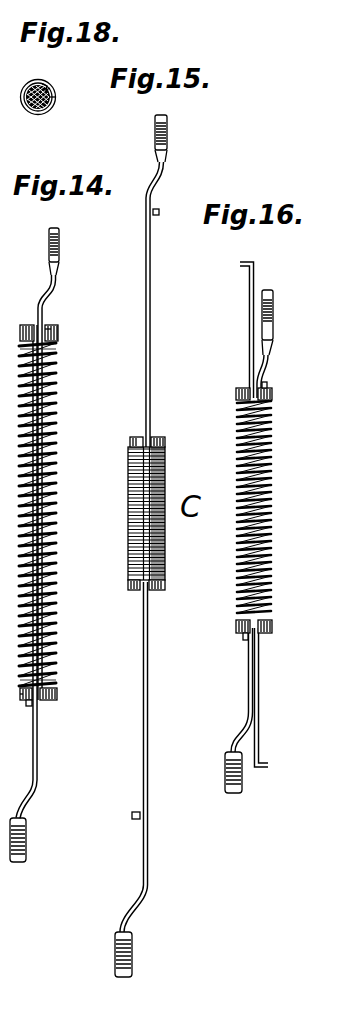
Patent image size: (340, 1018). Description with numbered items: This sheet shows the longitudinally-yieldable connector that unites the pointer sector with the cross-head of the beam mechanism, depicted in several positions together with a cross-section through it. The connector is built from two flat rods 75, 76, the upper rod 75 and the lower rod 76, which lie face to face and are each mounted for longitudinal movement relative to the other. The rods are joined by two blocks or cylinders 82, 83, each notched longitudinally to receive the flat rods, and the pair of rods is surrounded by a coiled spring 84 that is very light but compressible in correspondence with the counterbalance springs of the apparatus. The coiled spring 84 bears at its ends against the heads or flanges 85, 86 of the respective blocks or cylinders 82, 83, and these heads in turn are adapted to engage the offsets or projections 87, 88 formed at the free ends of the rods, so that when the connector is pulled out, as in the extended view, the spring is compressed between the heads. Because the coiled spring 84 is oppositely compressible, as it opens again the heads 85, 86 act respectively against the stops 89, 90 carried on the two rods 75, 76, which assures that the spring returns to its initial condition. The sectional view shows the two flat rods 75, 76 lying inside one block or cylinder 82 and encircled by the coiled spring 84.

In FIG. 18, the upper rod 75 is at (50, 90).
In FIG. 14, the upper rod 75 is at (49, 464).
In FIG. 15, the upper rod 75 is at (152, 350).
In FIG. 16, the upper rod 75 is at (262, 372).
In FIG. 18, the lower rod 76 is at (57, 98).
In FIG. 14, the lower rod 76 is at (37, 778).
In FIG. 15, the lower rod 76 is at (148, 740).
In FIG. 16, the lower rod 76 is at (250, 688).
In FIG. 18, the block or cylinder 82 is at (33, 88).
In FIG. 14, the block or cylinder 82 is at (53, 352).
In FIG. 14, the block or cylinder 83 is at (50, 680).
In FIG. 18, the coiled spring 84 is at (42, 110).
In FIG. 14, the coiled spring 84 is at (55, 527).
In FIG. 15, the coiled spring 84 is at (165, 541).
In FIG. 16, the coiled spring 84 is at (272, 515).
In FIG. 14, the head or flange 85 is at (58, 332).
In FIG. 15, the head or flange 85 is at (163, 438).
In FIG. 16, the head or flange 85 is at (243, 394).
In FIG. 14, the head or flange 86 is at (18, 702).
In FIG. 15, the head or flange 86 is at (128, 587).
In FIG. 16, the head or flange 86 is at (240, 630).
In FIG. 14, the offset or projection 87 is at (47, 701).
In FIG. 15, the offset or projection 87 is at (150, 590).
In FIG. 16, the offset or projection 87 is at (266, 767).
In FIG. 14, the offset or projection 88 is at (28, 325).
In FIG. 15, the offset or projection 88 is at (133, 438).
In FIG. 16, the offset or projection 88 is at (242, 262).
In FIG. 14, the stop 89 is at (50, 328).
In FIG. 15, the stop 89 is at (158, 212).
In FIG. 16, the stop 89 is at (267, 384).
In FIG. 14, the stop 90 is at (28, 704).
In FIG. 15, the stop 90 is at (135, 817).
In FIG. 16, the stop 90 is at (245, 642).